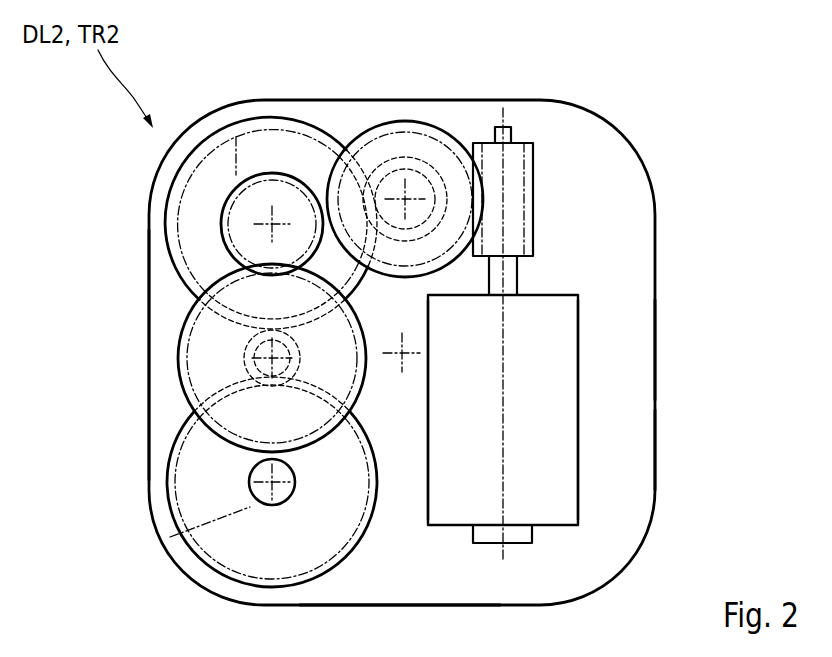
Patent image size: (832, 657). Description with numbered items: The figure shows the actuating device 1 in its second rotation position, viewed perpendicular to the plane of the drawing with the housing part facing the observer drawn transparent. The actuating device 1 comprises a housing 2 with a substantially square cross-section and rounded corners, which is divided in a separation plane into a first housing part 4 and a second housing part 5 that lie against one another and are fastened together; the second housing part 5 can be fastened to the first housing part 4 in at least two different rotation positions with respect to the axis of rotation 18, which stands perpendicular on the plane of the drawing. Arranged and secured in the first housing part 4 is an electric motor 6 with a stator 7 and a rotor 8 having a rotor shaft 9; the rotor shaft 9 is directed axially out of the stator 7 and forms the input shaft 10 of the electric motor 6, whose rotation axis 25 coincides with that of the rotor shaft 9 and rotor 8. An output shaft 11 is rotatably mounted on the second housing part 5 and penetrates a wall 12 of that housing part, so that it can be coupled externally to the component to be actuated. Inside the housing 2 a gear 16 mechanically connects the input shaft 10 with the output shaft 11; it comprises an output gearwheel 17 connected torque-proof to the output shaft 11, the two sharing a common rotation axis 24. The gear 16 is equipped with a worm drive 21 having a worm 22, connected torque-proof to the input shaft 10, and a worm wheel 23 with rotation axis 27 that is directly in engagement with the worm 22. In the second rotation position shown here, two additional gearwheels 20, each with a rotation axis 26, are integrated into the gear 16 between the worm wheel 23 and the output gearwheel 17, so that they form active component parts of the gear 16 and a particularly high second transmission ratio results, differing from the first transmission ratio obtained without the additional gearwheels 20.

The actuating device 1 is at (717, 147).
The housing 2 is at (667, 278).
The first housing part 4 is at (656, 351).
The second housing part 5 is at (656, 452).
The electric motor 6 is at (592, 407).
The stator 7 is at (428, 402).
The rotor 8 is at (540, 366).
The rotor shaft 9 is at (517, 278).
The input shaft 10 is at (511, 134).
The output shaft 11 is at (278, 490).
The wall 12 is at (398, 535).
The gear 16 is at (165, 292).
The output gearwheel 17 is at (175, 482).
The axis of rotation 18 is at (404, 356).
The additional gearwheel 20 is at (178, 215).
The worm drive 21 is at (468, 120).
The worm 22 is at (533, 200).
The worm wheel 23 is at (404, 127).
The rotation axis 24 is at (162, 541).
The rotation axis 25 is at (503, 120).
The rotation axis 26 is at (236, 137).
The rotation axis 27 is at (403, 198).